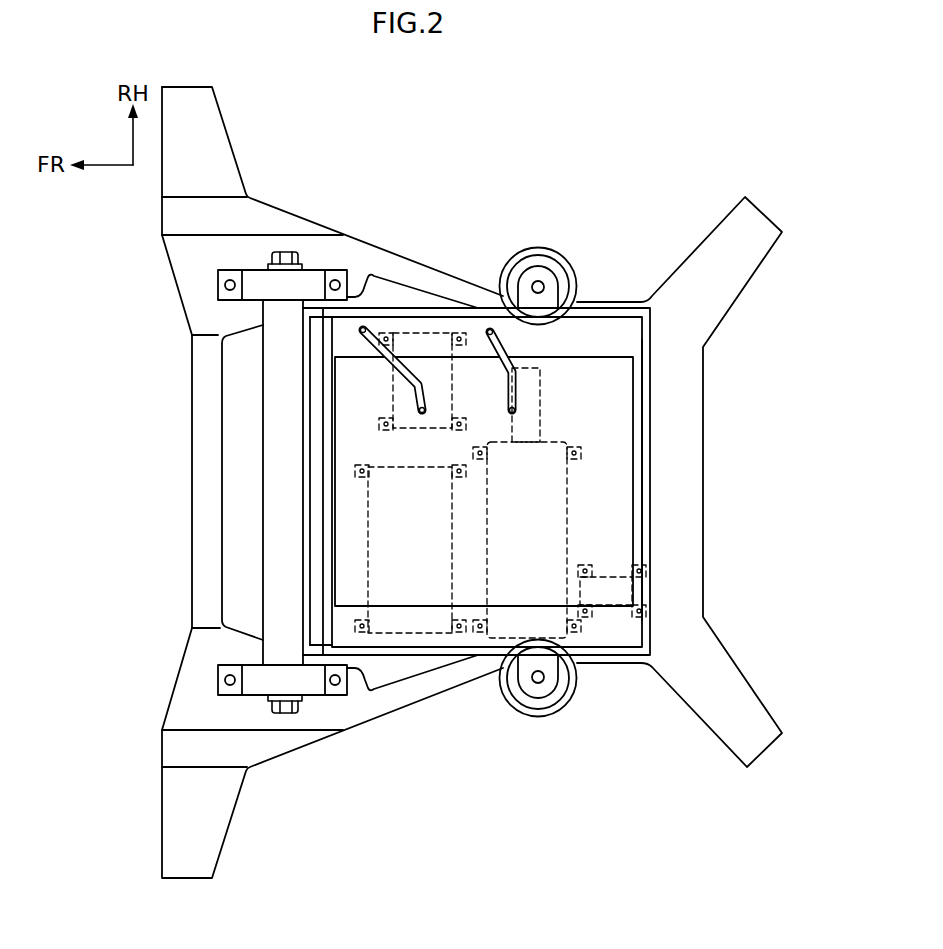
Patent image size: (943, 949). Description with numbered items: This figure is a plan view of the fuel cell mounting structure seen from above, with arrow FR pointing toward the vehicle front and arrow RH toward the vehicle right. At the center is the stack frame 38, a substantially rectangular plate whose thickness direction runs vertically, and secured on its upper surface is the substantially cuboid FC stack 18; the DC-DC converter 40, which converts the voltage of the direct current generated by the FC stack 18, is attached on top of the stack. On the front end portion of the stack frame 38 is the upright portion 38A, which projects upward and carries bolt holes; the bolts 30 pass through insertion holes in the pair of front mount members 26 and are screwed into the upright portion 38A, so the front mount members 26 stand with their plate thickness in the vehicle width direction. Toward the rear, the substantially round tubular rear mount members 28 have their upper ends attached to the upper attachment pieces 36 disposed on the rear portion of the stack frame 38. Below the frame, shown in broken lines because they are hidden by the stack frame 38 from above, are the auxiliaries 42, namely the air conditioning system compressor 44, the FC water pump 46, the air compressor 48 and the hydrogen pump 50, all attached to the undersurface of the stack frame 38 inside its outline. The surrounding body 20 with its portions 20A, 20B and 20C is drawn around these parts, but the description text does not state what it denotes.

The FC stack 18 is at (643, 402).
The base bracket 20 is at (422, 482).
The inclined side wall of base bracket 20A is at (441, 272).
The rear wall of base bracket 20B is at (190, 490).
The front wall of base bracket 20C is at (705, 500).
The front mount member 26 is at (307, 262).
The rear mount member 28 is at (528, 246).
The bolt 30 is at (283, 252).
The upper attachment piece 36 is at (573, 277).
The stack frame 38 is at (655, 454).
The upright portion 38A is at (262, 555).
The DC-DC converter 40 is at (610, 355).
The auxiliaries 42 is at (563, 493).
The air conditioning system compressor 44 is at (402, 636).
The FC water pump 46 is at (415, 330).
The air compressor 48 is at (572, 523).
The hydrogen pump 50 is at (610, 606).